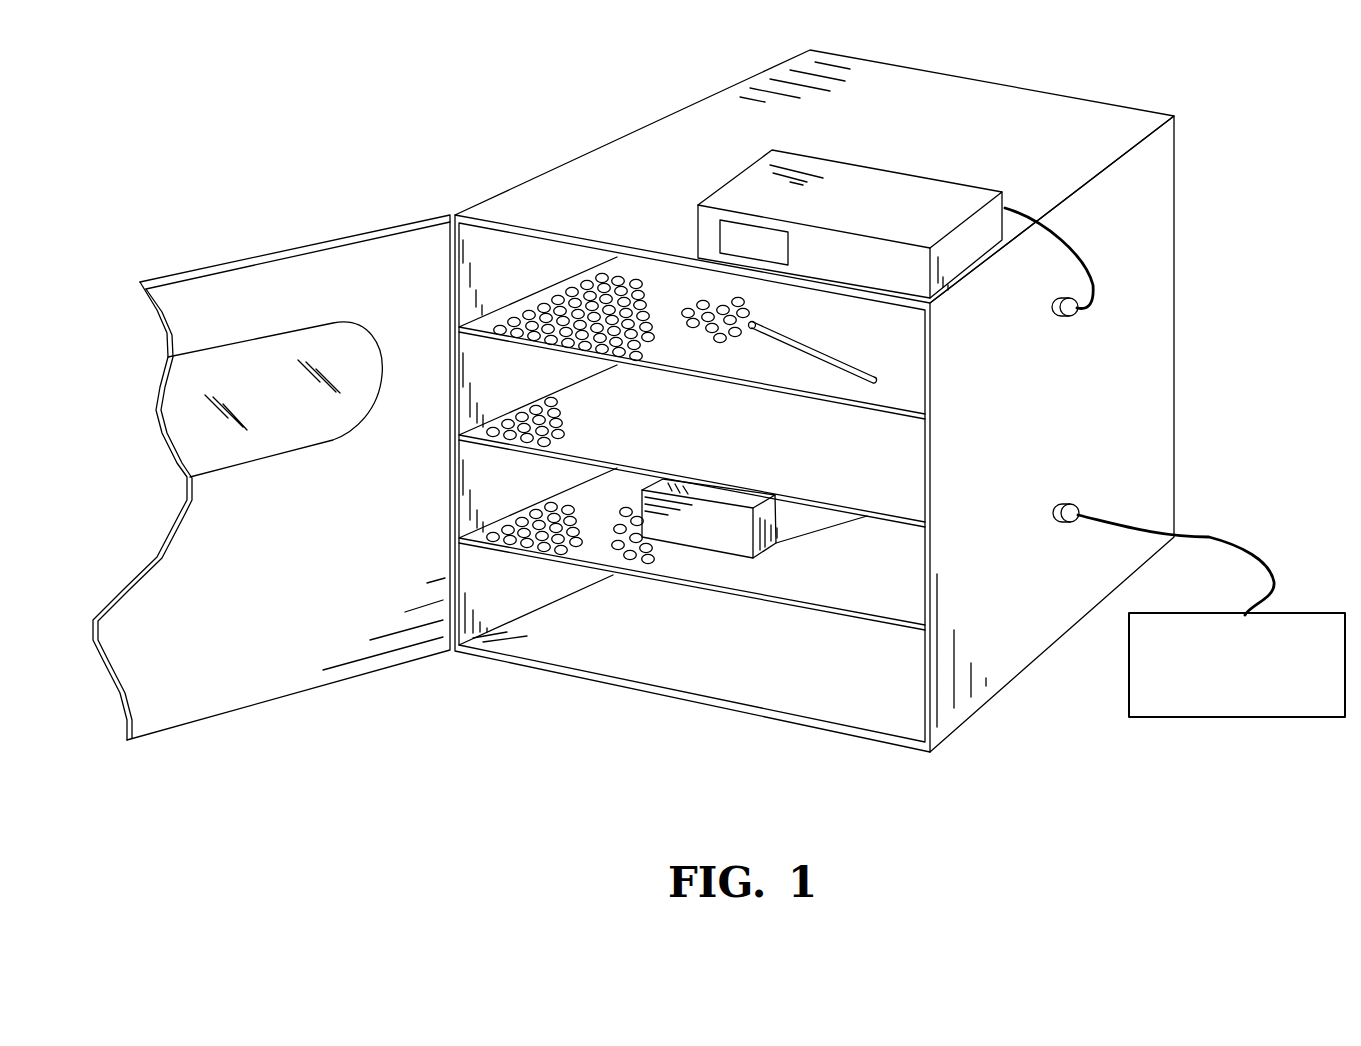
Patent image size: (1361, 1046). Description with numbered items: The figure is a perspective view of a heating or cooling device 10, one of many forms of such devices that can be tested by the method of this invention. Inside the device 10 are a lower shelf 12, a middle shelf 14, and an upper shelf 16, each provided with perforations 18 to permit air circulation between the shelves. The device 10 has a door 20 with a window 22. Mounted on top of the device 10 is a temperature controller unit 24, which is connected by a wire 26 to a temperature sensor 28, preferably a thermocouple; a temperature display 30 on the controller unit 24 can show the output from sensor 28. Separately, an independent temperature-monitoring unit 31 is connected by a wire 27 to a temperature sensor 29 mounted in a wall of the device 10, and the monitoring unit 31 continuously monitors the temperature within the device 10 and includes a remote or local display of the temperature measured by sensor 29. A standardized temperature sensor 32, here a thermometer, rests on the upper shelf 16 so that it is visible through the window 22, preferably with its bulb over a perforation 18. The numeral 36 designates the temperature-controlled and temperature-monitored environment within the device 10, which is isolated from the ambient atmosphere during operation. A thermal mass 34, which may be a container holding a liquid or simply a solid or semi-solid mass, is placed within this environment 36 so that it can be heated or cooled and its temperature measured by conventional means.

The heating or cooling device 10 is at (567, 137).
The lower shelf 12 is at (887, 604).
The middle shelf 14 is at (907, 500).
The upper shelf 16 is at (663, 350).
The perforations 18 is at (546, 522).
The door 20 is at (237, 668).
The window 22 is at (258, 360).
The temperature controller unit 24 is at (925, 192).
The wire 26 is at (1088, 268).
The wire 27 is at (1239, 546).
The temperature sensor 28 is at (1073, 320).
The temperature sensor 29 is at (1079, 507).
The temperature display 30 is at (743, 240).
The independent temperature-monitoring unit 31 is at (1237, 665).
The standardized temperature sensor 32 is at (837, 360).
The thermal mass 34 is at (735, 525).
The temperature-controlled and temperature-monitored environment 36 is at (762, 462).